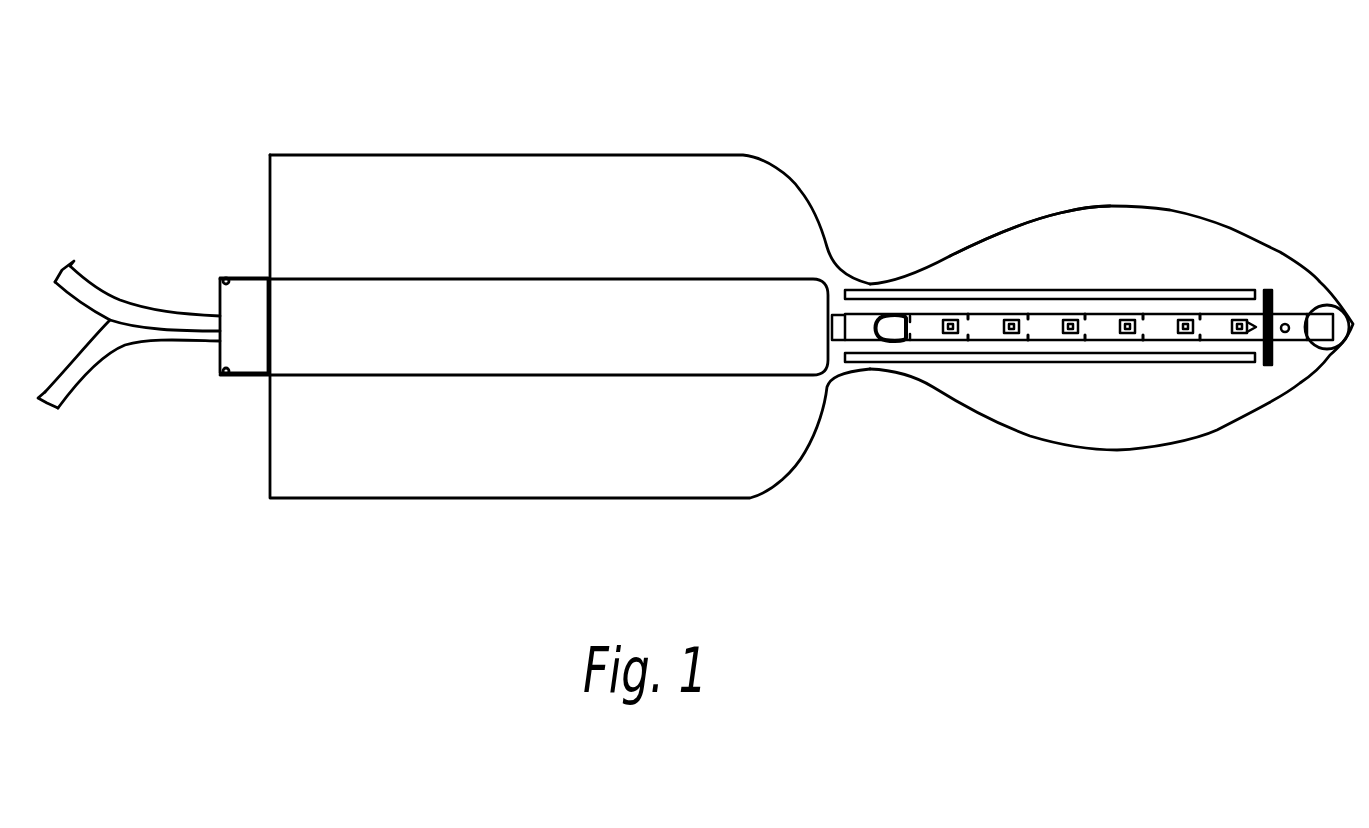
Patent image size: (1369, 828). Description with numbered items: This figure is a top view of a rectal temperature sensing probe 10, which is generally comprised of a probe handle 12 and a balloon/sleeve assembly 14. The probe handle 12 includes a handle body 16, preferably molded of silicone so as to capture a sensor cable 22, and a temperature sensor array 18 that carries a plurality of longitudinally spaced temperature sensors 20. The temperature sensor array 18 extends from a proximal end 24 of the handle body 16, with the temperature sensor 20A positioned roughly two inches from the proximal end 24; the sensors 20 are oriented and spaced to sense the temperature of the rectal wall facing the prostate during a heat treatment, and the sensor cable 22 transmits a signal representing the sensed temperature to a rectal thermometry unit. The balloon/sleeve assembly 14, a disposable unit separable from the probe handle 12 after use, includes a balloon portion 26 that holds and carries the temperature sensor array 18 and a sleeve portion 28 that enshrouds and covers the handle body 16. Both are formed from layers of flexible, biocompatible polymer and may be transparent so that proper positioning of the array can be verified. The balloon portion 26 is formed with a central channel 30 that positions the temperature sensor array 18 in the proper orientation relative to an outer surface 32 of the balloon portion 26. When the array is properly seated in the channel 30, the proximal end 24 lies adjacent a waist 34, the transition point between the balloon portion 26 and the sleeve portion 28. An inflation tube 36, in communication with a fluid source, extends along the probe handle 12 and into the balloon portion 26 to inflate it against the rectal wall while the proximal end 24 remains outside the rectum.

The rectal temperature sensing probe 10 is at (900, 160).
The probe handle 12 is at (450, 270).
The balloon/sleeve assembly 14 is at (659, 150).
The handle body 16 is at (591, 280).
The temperature sensor array 18 is at (1165, 328).
The temperature sensors 20 is at (1012, 320).
The temperature sensor 20A is at (948, 320).
The sensor cable 22 is at (83, 345).
The proximal end 24 is at (840, 378).
The balloon portion 26 is at (1030, 220).
The sleeve portion 28 is at (348, 155).
The central channel 30 is at (1033, 345).
The outer surface 32 is at (1150, 431).
The waist 34 is at (901, 242).
The inflation tube 36 is at (118, 307).